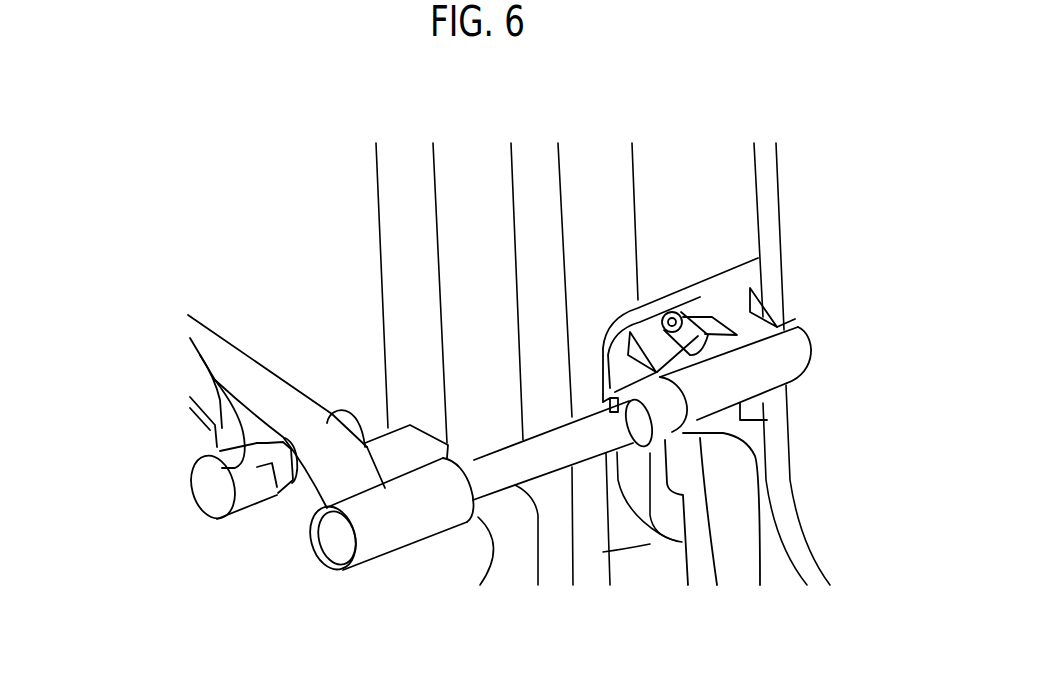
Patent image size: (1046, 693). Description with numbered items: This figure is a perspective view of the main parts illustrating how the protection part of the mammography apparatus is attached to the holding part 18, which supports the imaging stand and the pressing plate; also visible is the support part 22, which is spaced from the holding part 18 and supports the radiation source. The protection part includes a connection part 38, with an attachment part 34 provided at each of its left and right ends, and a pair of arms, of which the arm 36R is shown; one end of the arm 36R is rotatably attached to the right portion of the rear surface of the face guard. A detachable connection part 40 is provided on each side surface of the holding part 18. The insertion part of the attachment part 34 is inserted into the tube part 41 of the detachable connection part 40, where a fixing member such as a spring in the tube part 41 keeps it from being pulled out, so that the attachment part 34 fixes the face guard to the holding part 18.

The holding part 18 is at (692, 225).
The support part 22 is at (823, 212).
The attachment part 34 is at (545, 462).
The arm 36R is at (200, 388).
The connection part 38 is at (292, 398).
The detachable connection part 40 is at (740, 420).
The tube part 41 is at (763, 367).